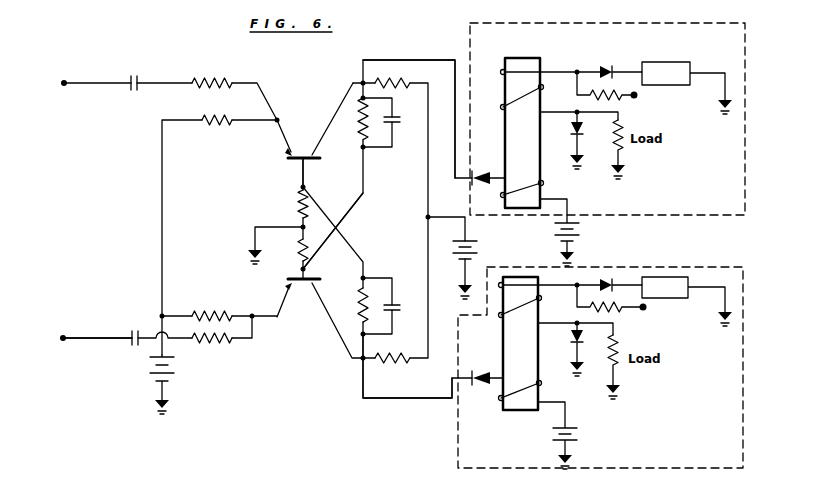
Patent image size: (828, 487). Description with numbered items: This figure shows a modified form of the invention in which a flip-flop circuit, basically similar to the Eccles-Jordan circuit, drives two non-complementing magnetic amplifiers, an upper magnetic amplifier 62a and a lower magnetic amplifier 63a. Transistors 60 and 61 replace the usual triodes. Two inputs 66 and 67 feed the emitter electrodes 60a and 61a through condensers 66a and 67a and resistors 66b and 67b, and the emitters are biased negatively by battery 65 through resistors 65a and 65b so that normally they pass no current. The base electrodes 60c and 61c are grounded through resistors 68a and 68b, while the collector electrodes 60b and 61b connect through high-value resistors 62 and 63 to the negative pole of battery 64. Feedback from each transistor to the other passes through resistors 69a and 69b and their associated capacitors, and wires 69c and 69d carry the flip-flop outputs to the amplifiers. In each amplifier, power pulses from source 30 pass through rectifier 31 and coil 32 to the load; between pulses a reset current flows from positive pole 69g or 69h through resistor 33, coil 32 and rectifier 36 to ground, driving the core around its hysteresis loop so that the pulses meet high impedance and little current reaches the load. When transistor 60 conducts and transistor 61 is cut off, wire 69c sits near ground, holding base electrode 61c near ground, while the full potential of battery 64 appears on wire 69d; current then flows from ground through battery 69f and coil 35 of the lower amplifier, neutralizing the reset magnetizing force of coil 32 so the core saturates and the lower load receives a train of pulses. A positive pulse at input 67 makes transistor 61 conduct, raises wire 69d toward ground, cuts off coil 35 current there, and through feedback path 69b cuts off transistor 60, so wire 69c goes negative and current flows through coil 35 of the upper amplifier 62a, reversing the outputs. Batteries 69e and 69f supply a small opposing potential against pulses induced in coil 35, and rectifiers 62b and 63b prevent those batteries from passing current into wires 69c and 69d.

The power pulse source 30 is at (682, 62).
The rectifier 31 is at (604, 66).
The coil 32 is at (500, 72).
The resistor 33 is at (582, 95).
The input coil 35 is at (500, 195).
The rectifier 36 is at (570, 137).
The transistor 60 is at (286, 163).
The emitter electrode of transistor 60 60a is at (280, 143).
The collector electrode of transistor 60 60b is at (316, 144).
The base electrode of transistor 60 60c is at (306, 173).
The transistor 61 is at (284, 282).
The emitter electrode of transistor 61 61a is at (286, 304).
The collector electrode of transistor 61 61b is at (316, 288).
The base electrode of transistor 61 61c is at (308, 267).
The resistor 62 is at (395, 88).
The upper magnetic amplifier 62a is at (660, 214).
The rectifier 62b is at (484, 172).
The resistor 63 is at (390, 370).
The lower magnetic amplifier 63a is at (458, 440).
The rectifier 63b is at (486, 353).
The battery 64 is at (468, 264).
The battery 65 is at (148, 374).
The resistor 65a is at (228, 125).
The resistor 65b is at (216, 307).
The input 66 is at (72, 78).
The condenser 66a is at (148, 70).
The resistor 66b is at (234, 75).
The input 67 is at (68, 334).
The condenser 67a is at (138, 328).
The resistor 67b is at (204, 357).
The resistor 68a is at (298, 203).
The resistor 68b is at (298, 253).
The feedback resistor 69a is at (357, 118).
The feedback resistor 69b is at (360, 312).
The wire 69c is at (428, 58).
The wire 69d is at (400, 406).
The battery 69e is at (580, 232).
The battery 69f is at (578, 428).
The positive pole 69g is at (636, 103).
The positive pole 69h is at (650, 316).